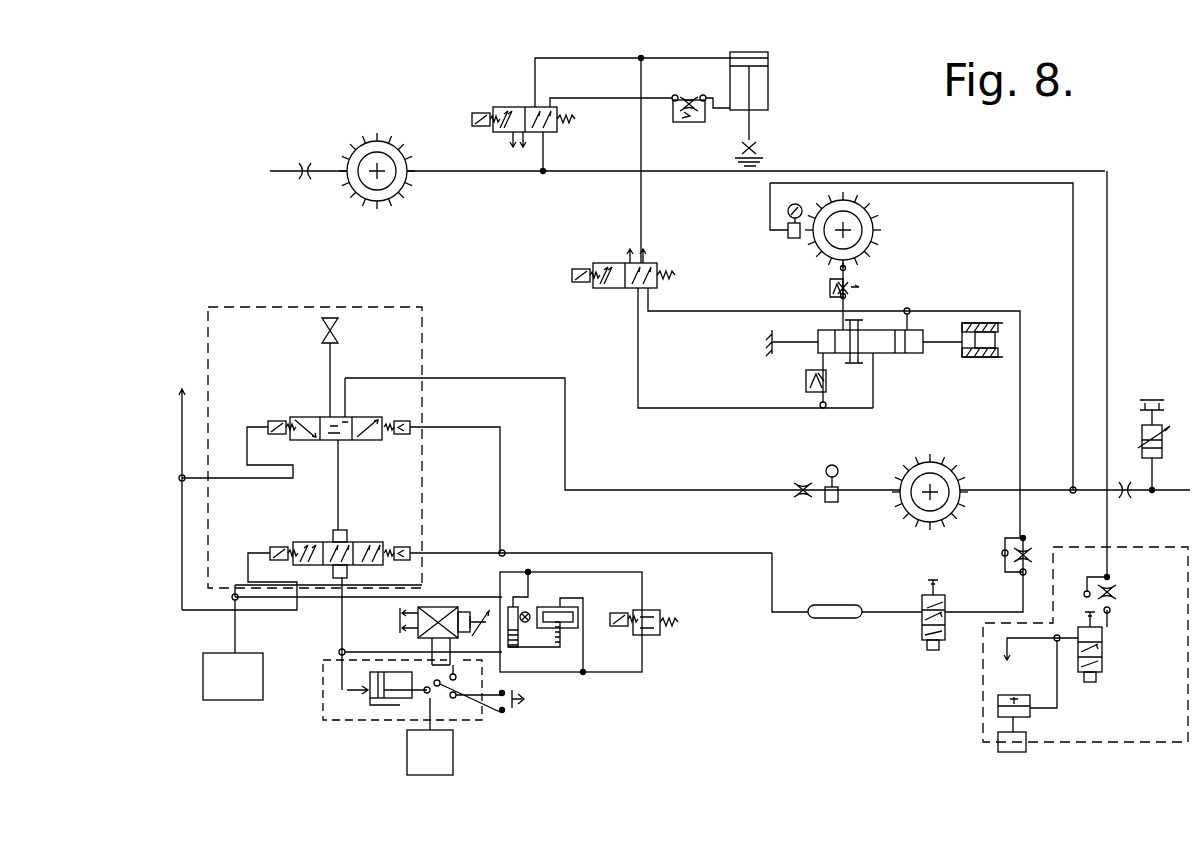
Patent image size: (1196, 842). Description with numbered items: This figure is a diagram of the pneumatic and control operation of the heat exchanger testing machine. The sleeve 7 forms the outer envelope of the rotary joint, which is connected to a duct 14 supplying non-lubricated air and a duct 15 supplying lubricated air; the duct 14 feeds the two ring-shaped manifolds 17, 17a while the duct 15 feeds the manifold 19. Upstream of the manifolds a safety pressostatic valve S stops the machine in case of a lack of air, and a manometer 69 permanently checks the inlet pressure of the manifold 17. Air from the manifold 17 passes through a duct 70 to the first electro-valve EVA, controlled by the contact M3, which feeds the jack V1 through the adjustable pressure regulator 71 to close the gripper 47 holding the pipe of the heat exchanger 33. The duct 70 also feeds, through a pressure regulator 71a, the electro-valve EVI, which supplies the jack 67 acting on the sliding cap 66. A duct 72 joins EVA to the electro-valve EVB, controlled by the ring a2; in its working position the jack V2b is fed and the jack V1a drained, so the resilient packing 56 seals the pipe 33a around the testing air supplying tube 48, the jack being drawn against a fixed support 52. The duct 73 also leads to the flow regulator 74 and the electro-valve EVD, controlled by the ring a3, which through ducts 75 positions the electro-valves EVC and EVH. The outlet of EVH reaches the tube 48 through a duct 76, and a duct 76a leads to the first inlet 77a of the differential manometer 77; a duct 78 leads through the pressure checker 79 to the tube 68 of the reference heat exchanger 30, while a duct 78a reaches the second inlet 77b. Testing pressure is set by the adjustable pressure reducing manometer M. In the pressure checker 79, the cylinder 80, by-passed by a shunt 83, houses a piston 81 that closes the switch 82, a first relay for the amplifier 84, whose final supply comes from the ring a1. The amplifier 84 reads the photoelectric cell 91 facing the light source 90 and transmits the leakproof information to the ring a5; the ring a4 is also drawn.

The sleeve 7 is at (304, 179).
The duct 14 is at (1072, 413).
The duct 15 is at (322, 168).
The ring-shaped manifold 17 is at (874, 224).
The ring-shaped manifold 17a is at (950, 450).
The manifold 19 is at (380, 138).
The reference heat exchanger 30 is at (440, 766).
The heat exchanger 33 is at (244, 690).
The pipe 33a is at (984, 324).
The gripper 47 is at (756, 147).
The testing air supplying tube 48 is at (926, 348).
The fixed support 52 is at (767, 346).
The resilient packing 56 is at (975, 360).
The sliding cap 66 is at (1030, 738).
The jack 67 is at (995, 706).
The tube 68 is at (430, 700).
The manometer 69 is at (785, 236).
The duct 70 is at (570, 178).
The adjustable pressure regulator 71 is at (686, 95).
The pressure regulator 71a is at (1115, 592).
The duct 72 is at (643, 222).
The duct 73 is at (885, 310).
The flow regulator 74 is at (1014, 538).
The ducts 75 is at (522, 549).
The duct 76 is at (310, 604).
The duct 76a is at (332, 605).
The differential manometer 77 is at (574, 640).
The first inlet 77a is at (525, 602).
The second inlet 77b is at (560, 606).
The duct 78 is at (342, 622).
The duct 78a is at (386, 656).
The pressure checker 79 is at (370, 698).
The cylinder 80 is at (385, 698).
The piston 81 is at (365, 690).
The switch 82 is at (460, 700).
The shunt 83 is at (430, 703).
The amplifier 84 is at (442, 606).
The light source 90 is at (536, 638).
The photoelectric cell 91 is at (485, 630).
The first electro-valve EVA is at (510, 99).
The electro-valve EVB is at (617, 246).
The electro-valve EVC is at (308, 396).
The electro-valve EVD is at (917, 624).
The electro-valve EVH is at (308, 518).
The second electro-valve EVI is at (1106, 660).
The jack V1 is at (770, 86).
The jack V1a is at (840, 356).
The jack V2b is at (898, 356).
The adjustable pressure reducing manometer M is at (832, 502).
The contact M3 is at (472, 113).
The safety pressostatic valve S is at (1165, 443).
The ring a1 is at (525, 698).
The ring a2 is at (572, 277).
The ring a3 is at (925, 654).
The signal a4 is at (174, 400).
The ring a5 is at (342, 642).